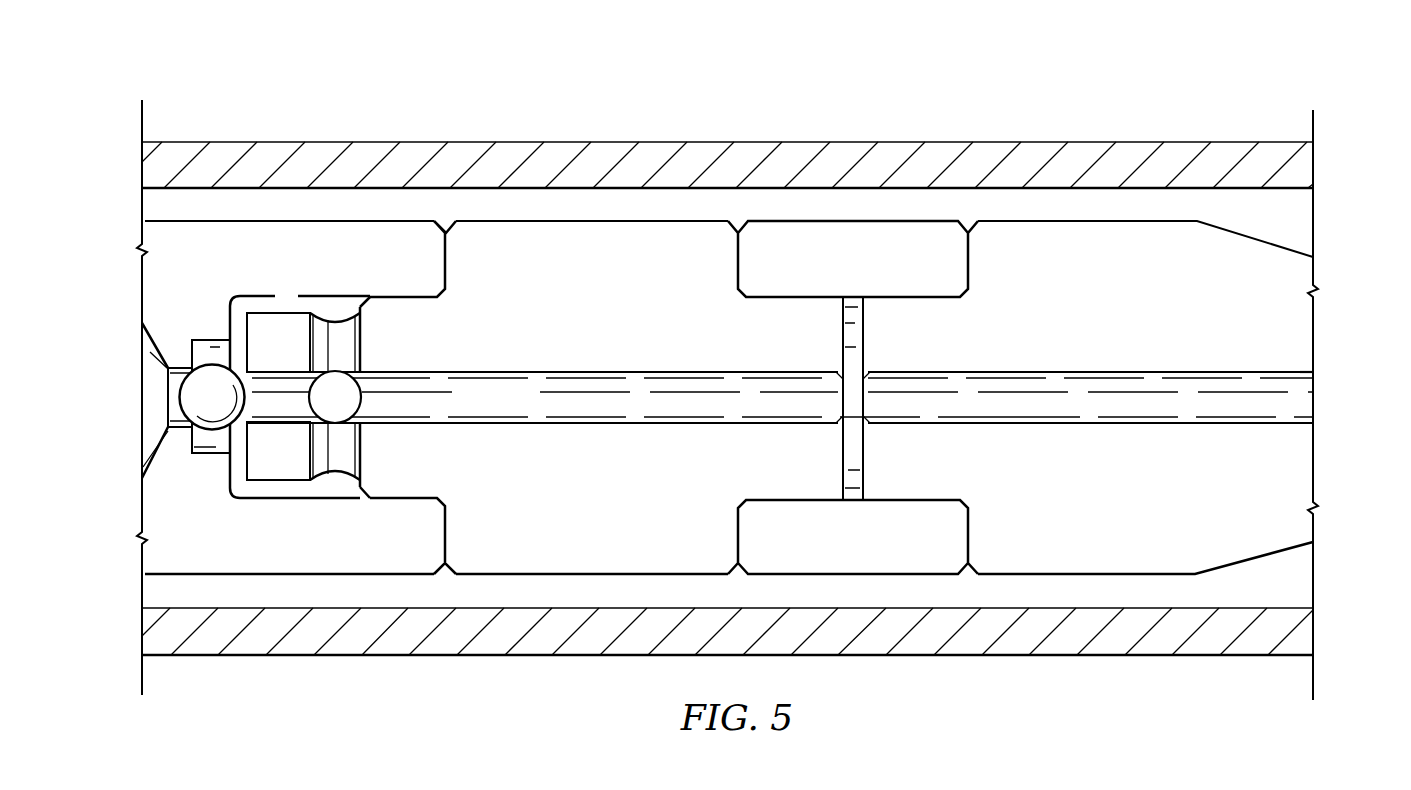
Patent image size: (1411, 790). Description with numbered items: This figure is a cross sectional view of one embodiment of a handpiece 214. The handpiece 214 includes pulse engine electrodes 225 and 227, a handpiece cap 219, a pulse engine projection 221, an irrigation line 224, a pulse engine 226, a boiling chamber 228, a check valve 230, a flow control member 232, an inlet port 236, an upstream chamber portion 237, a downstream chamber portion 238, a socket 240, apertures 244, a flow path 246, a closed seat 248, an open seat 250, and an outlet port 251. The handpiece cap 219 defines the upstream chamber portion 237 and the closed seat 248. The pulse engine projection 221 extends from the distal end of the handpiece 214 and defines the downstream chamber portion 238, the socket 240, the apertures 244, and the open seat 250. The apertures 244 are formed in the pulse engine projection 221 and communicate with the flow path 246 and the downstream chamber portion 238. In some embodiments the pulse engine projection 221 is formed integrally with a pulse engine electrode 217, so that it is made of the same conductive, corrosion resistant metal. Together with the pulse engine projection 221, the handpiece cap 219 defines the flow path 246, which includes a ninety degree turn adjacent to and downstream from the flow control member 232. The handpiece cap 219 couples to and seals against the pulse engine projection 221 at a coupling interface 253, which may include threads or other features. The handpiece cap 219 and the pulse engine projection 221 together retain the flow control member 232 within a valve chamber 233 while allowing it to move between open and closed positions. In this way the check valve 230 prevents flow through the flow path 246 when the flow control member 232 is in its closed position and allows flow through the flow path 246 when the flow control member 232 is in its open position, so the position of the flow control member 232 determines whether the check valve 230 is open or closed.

The handpiece 214 is at (872, 94).
The pulse engine electrode 217 is at (583, 221).
The handpiece cap 219 is at (178, 221).
The pulse engine projection 221 is at (409, 499).
The irrigation line 224 is at (1218, 425).
The pulse engine electrode 225 is at (670, 221).
The pulse engine 226 is at (996, 139).
The pulse engine electrode 227 is at (1105, 221).
The boiling chamber 228 is at (854, 295).
The check valve 230 is at (331, 310).
The flow control member 232 is at (186, 397).
The valve chamber 233 is at (284, 303).
The inlet port 236 is at (127, 335).
The upstream chamber portion 237 is at (160, 384).
The downstream chamber portion 238 is at (518, 410).
The socket 240 is at (257, 402).
The apertures 244 is at (343, 476).
The flow path 246 is at (256, 306).
The closed seat 248 is at (200, 355).
The open seat 250 is at (257, 378).
The outlet port 251 is at (1322, 388).
The coupling interface 253 is at (416, 287).